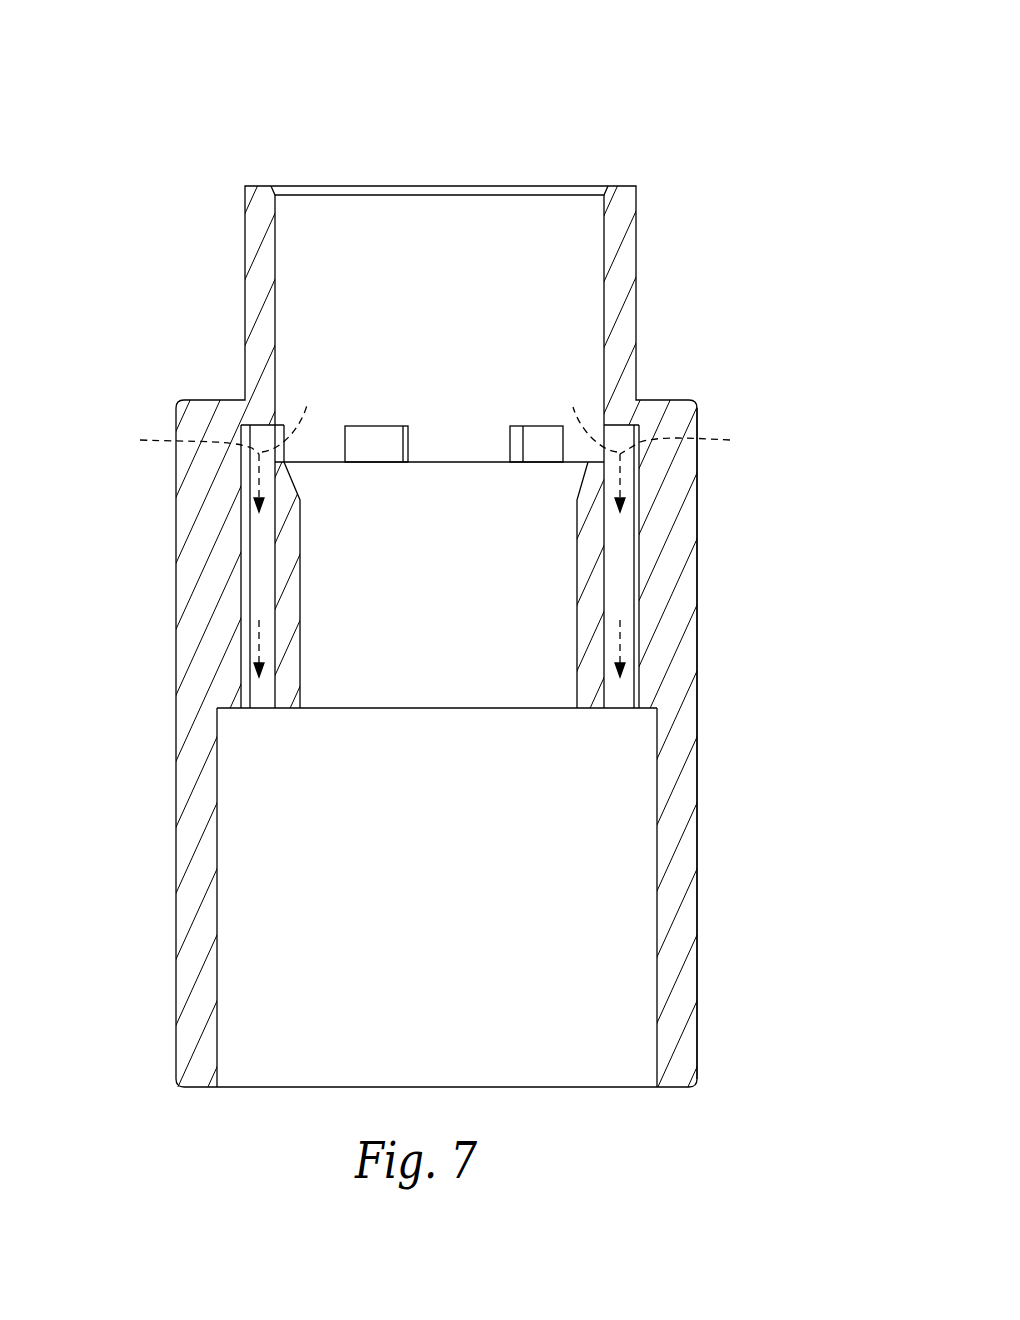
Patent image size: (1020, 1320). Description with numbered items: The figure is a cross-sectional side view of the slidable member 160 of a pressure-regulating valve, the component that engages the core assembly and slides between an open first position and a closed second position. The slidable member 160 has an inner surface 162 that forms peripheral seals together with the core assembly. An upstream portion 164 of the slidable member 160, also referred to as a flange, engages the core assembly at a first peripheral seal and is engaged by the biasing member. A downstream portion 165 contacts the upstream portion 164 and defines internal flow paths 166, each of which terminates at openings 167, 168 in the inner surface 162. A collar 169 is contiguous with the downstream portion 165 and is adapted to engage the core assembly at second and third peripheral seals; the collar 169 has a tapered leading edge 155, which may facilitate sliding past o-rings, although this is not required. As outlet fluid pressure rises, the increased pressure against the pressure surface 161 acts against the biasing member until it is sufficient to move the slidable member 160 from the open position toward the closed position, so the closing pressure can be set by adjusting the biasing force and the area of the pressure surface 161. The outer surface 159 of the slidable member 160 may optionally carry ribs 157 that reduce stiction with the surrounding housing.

The slidable member 160 is at (640, 90).
The upstream portion 164 is at (617, 263).
The opening 167 is at (373, 435).
The internal flow paths 166 is at (431, 541).
The tapered leading edge 155 is at (586, 482).
The collar 169 is at (590, 533).
The inner surface 162 is at (540, 587).
The ribs 157 is at (684, 633).
The opening 168 is at (258, 708).
The pressure surface 161 is at (293, 708).
The outer surface 159 is at (695, 830).
The downstream portion 165 is at (681, 903).